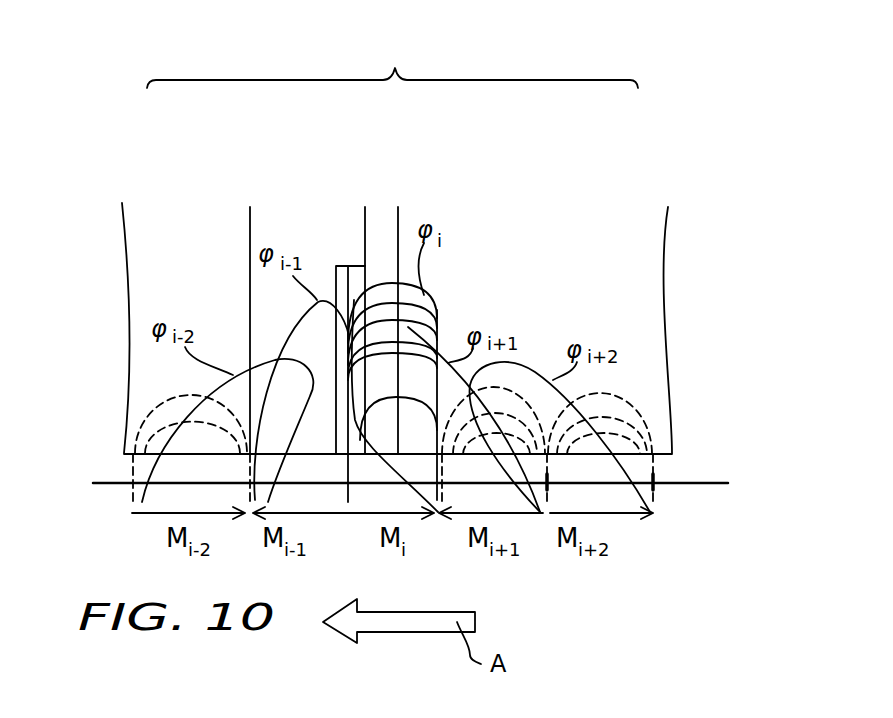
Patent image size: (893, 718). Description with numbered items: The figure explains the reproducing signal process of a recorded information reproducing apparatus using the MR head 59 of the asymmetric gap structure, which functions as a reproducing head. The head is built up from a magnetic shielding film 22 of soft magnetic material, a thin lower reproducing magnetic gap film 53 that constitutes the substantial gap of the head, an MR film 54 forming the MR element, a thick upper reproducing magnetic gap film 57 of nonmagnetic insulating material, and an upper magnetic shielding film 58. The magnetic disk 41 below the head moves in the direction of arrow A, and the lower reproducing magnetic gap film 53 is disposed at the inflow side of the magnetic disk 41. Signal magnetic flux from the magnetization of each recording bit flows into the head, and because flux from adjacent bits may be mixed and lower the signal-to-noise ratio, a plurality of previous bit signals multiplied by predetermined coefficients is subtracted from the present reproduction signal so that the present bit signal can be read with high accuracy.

The MR head 59 is at (392, 62).
The upper magnetic shielding film 58 is at (195, 230).
The upper reproducing magnetic gap film 57 is at (280, 222).
The MR film 54 is at (345, 283).
The lower reproducing magnetic gap film 53 is at (377, 223).
The magnetic shielding film 22 is at (522, 230).
The magnetic disk 41 is at (700, 517).